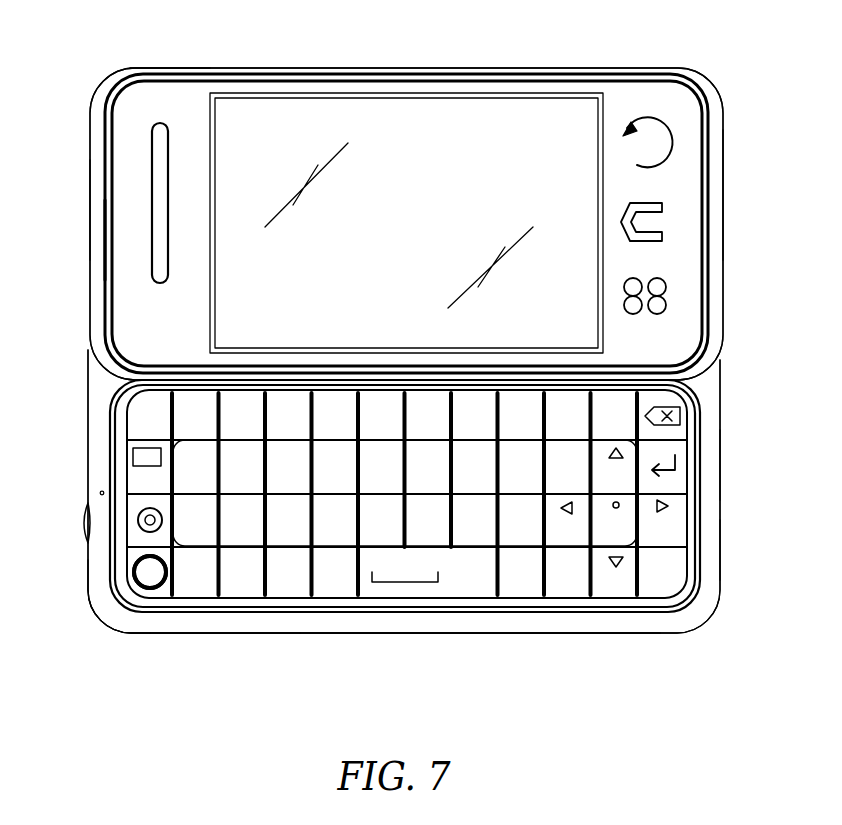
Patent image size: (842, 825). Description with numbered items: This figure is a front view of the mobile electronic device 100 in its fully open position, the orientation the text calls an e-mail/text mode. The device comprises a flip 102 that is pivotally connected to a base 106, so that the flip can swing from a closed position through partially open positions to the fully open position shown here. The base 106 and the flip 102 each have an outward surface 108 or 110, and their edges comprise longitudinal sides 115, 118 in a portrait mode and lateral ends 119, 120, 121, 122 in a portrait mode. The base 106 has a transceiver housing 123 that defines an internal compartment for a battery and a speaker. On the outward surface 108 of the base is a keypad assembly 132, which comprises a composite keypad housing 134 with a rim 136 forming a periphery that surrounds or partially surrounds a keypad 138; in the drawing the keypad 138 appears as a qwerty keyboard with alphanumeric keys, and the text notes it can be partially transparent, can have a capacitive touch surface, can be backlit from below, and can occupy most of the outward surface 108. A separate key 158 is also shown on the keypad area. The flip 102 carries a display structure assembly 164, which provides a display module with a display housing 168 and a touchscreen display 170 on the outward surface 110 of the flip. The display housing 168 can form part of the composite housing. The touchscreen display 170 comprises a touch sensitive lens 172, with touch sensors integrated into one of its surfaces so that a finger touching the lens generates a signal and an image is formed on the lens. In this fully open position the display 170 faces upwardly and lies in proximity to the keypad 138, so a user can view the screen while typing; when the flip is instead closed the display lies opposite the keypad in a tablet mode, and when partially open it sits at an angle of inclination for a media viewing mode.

The mobile electronic device 100 is at (80, 349).
The flip 102 is at (124, 72).
The base 106 is at (680, 624).
The outward surface of base 108 is at (125, 431).
The outward surface of flip 110 is at (130, 150).
The longitudinal side 115 is at (561, 633).
The longitudinal side 118 is at (148, 68).
The lateral end 119 is at (90, 524).
The lateral end 120 is at (90, 207).
The lateral end 121 is at (723, 183).
The lateral end 122 is at (721, 464).
The transceiver housing 123 is at (721, 547).
The keypad assembly 132 is at (106, 598).
The keypad housing 134 is at (218, 622).
The rim 136 is at (88, 396).
The keypad 138 is at (258, 586).
The function key 158 is at (180, 588).
The display structure assembly 164 is at (220, 74).
The display housing 168 is at (106, 240).
The touchscreen display 170 is at (480, 118).
The touch sensitive lens 172 is at (397, 93).